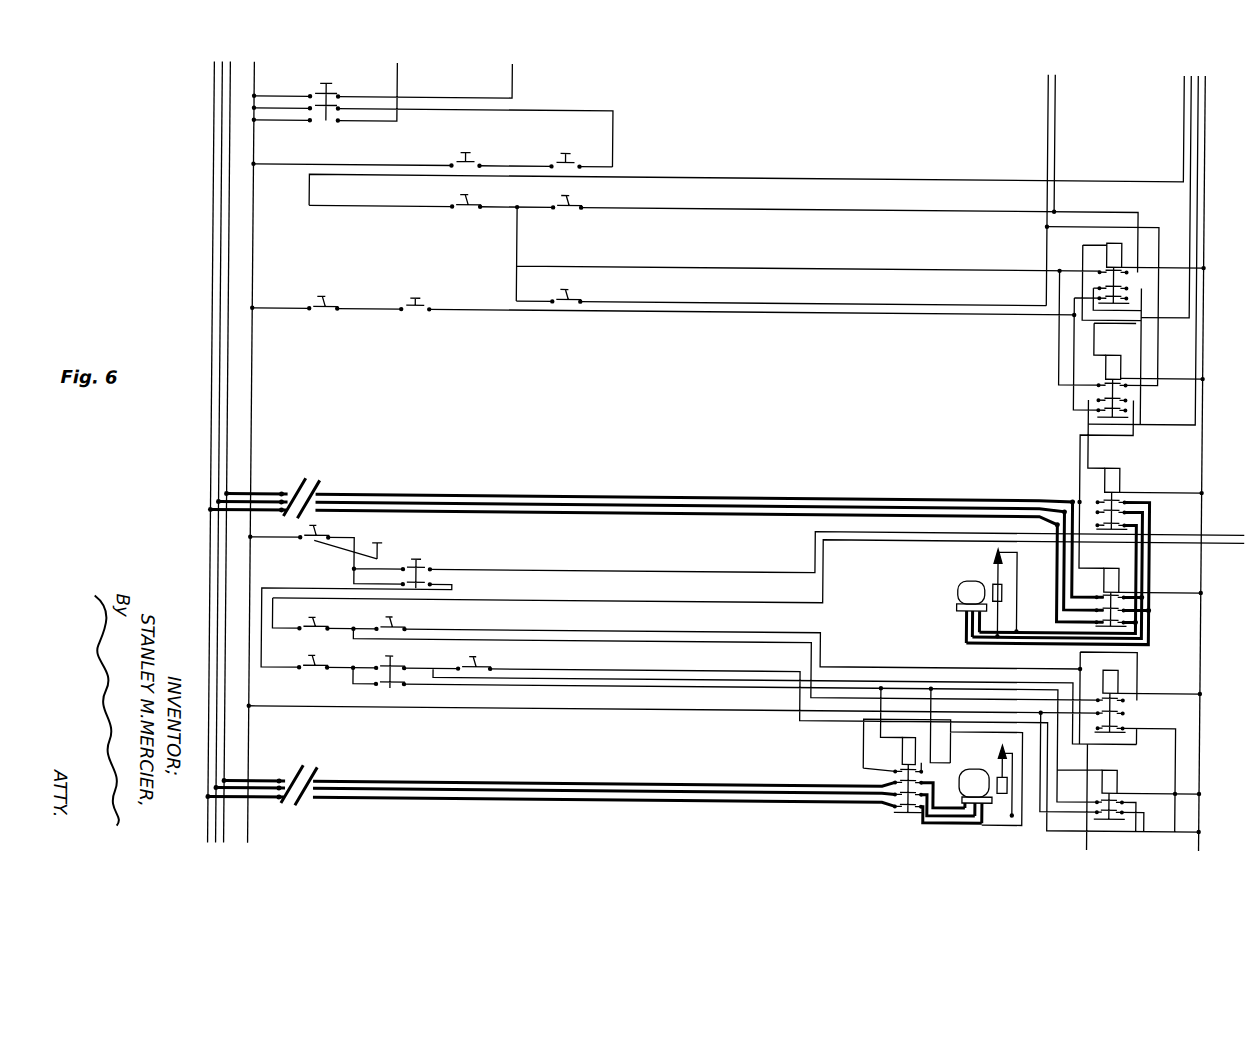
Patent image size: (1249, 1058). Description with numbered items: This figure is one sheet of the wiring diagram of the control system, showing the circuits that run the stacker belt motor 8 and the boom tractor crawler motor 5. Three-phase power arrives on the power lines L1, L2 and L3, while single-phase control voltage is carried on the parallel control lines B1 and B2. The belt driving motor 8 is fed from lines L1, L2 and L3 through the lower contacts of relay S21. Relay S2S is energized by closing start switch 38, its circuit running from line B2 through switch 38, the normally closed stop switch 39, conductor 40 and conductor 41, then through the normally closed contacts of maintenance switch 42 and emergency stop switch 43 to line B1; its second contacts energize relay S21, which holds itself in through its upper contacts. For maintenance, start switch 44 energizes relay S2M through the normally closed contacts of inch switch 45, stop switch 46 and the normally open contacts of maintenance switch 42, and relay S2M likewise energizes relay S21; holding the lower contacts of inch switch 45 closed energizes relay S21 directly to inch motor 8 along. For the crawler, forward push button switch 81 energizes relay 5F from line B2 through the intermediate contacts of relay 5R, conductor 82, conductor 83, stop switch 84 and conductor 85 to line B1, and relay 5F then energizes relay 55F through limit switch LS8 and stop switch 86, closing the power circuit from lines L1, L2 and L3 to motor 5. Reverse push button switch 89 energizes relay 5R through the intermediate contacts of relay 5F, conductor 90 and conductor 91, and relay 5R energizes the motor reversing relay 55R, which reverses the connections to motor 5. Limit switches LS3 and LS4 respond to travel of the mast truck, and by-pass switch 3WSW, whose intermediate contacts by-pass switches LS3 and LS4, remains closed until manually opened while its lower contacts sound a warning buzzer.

The power line L1 is at (210, 176).
The power line L2 is at (218, 198).
The power line L3 is at (226, 222).
The control line B1 is at (253, 253).
The control line B2 is at (1204, 184).
The by-pass switch 3WSW is at (432, 114).
The limit switch LS3 is at (466, 150).
The limit switch LS4 is at (566, 150).
The limit switch LS8 is at (416, 294).
The conductor 85 is at (374, 209).
The stop switch 84 is at (468, 206).
The forward push button switch 81 is at (578, 201).
The conductor 83 is at (866, 210).
The stop switch 86 is at (325, 302).
The reverse push button switch 89 is at (575, 294).
The conductor 91 is at (912, 308).
The conductor 90 is at (1188, 110).
The conductor 82 is at (1195, 126).
The relay 5F is at (1111, 263).
The relay 5R is at (1112, 376).
The relay 55F is at (1110, 487).
The motor reversing relay 55R is at (1109, 587).
The emergency stop switch 43 is at (322, 535).
The maintenance switch 42 is at (422, 565).
The stop switch 39 is at (320, 626).
The start switch 38 is at (402, 618).
The stop switch 46 is at (320, 665).
The inch switch 45 is at (400, 664).
The start switch 44 is at (484, 661).
The conductor 41 is at (725, 570).
The conductor 40 is at (725, 601).
The crawler motor 5 is at (966, 581).
The belt driving motor 8 is at (985, 772).
The relay S21 is at (908, 764).
The relay S2S is at (1110, 691).
The relay S2M is at (1111, 784).